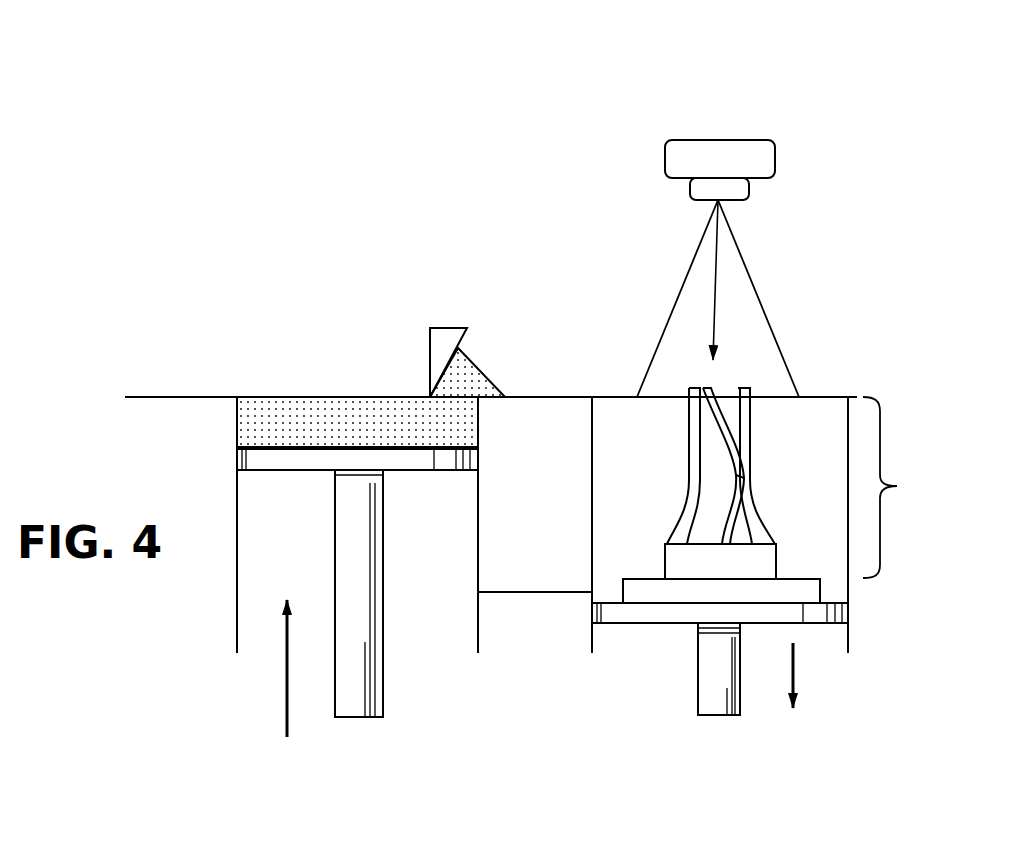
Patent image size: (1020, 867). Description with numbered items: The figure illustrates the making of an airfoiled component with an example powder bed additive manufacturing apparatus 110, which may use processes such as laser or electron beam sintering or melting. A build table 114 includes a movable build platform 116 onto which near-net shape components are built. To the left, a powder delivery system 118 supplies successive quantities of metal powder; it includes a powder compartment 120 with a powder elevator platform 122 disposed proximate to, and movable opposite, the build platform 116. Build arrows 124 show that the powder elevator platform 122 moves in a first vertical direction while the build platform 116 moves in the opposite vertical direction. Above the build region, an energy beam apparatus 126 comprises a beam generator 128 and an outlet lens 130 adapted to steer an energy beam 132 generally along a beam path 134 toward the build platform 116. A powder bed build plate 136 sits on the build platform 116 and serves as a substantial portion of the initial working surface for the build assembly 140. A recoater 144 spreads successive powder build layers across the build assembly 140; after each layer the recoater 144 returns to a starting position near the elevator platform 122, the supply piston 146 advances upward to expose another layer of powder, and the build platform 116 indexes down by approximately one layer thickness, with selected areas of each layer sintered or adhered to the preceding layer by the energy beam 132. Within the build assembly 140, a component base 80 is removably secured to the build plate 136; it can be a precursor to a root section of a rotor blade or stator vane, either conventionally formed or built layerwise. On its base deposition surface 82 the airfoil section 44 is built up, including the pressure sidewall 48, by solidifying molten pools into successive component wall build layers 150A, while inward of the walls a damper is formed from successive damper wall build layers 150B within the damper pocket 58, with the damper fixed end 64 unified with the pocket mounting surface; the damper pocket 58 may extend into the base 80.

The additive manufacturing apparatus 110 is at (182, 262).
The build table 114 is at (178, 384).
The build platform 116 is at (825, 653).
The powder delivery system 118 is at (340, 272).
The powder compartment 120 is at (234, 418).
The powder elevator platform 122 is at (445, 472).
The build arrows 124 is at (283, 683).
The energy beam apparatus 126 is at (787, 100).
The beam generator 128 is at (716, 155).
The outlet lens 130 is at (698, 190).
The energy beam 132 is at (710, 322).
The beam path 134 is at (752, 278).
The powder bed build plate 136 is at (821, 590).
The build assembly 140 is at (902, 487).
The recoater 144 is at (479, 306).
The supply piston 146 is at (356, 622).
The component wall build layer 150A is at (751, 386).
The damper wall build layer 150B is at (703, 386).
The airfoil section 44 is at (668, 413).
The pressure sidewall 48 is at (689, 485).
The damper pocket 58 is at (729, 485).
The damper fixed end 64 is at (728, 532).
The component base 80 is at (678, 562).
The base deposition surface 82 is at (706, 545).